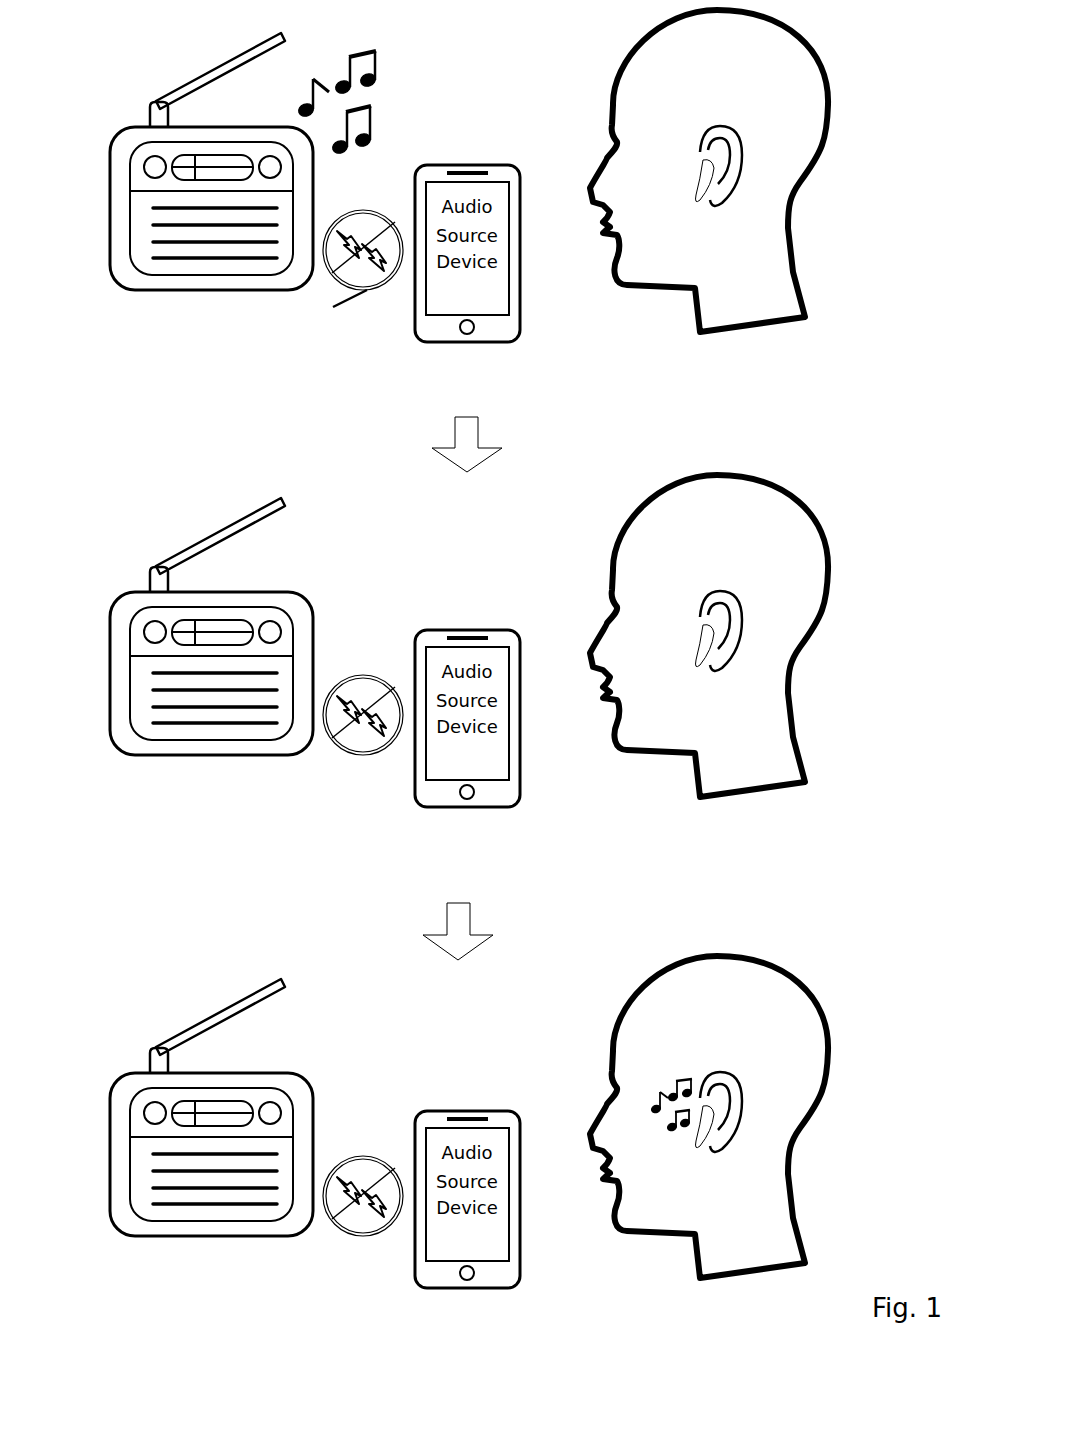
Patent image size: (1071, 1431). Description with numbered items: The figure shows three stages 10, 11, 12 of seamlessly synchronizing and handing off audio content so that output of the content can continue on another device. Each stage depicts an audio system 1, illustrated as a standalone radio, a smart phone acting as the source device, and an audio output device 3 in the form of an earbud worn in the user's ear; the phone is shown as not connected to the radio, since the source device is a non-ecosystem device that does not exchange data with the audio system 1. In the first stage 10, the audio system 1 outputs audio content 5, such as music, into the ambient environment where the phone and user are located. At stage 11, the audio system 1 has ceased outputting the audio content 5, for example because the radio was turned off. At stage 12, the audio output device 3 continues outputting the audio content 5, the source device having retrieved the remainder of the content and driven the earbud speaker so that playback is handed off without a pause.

The audio system 1 is at (153, 288).
The audio output device 3 is at (711, 182).
The audio content 5 is at (400, 55).
The first stage 10 is at (488, 203).
The stage 11 is at (429, 677).
The stage 12 is at (429, 1145).